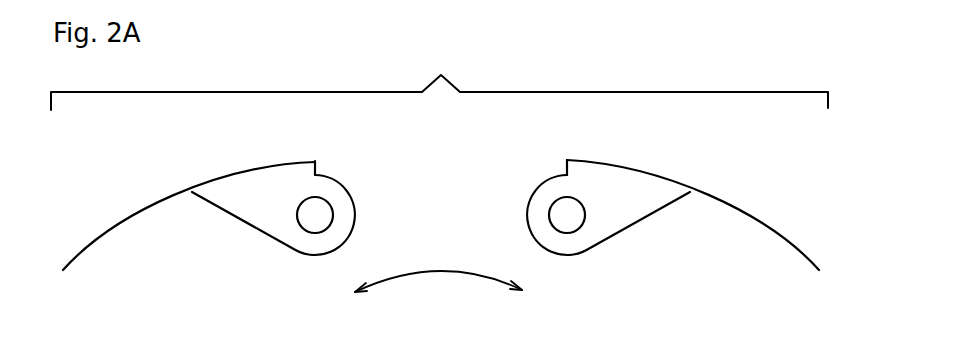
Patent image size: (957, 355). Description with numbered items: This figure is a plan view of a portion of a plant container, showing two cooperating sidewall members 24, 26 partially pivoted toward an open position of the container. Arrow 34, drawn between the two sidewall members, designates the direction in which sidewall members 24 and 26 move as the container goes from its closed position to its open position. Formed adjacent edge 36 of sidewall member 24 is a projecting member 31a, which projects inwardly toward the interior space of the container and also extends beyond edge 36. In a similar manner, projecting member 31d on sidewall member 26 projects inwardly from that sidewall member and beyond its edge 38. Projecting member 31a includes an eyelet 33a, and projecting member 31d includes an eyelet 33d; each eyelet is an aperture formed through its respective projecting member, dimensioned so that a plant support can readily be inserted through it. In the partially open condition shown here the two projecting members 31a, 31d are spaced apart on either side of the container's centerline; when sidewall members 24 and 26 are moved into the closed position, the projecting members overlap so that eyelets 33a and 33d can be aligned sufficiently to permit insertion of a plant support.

The sidewall member 24 is at (115, 225).
The sidewall member 26 is at (767, 222).
The projecting member 31a is at (258, 210).
The projecting member 31d is at (623, 210).
The eyelet 33a is at (333, 211).
The eyelet 33d is at (549, 211).
The arrow 34 is at (440, 271).
The edge 36 is at (315, 162).
The edge 38 is at (567, 160).